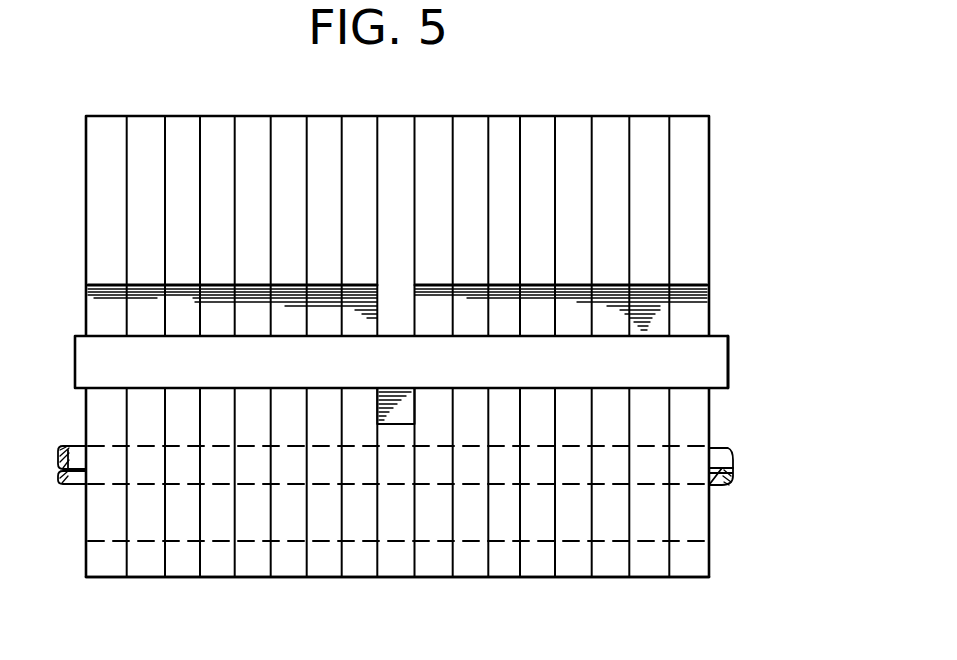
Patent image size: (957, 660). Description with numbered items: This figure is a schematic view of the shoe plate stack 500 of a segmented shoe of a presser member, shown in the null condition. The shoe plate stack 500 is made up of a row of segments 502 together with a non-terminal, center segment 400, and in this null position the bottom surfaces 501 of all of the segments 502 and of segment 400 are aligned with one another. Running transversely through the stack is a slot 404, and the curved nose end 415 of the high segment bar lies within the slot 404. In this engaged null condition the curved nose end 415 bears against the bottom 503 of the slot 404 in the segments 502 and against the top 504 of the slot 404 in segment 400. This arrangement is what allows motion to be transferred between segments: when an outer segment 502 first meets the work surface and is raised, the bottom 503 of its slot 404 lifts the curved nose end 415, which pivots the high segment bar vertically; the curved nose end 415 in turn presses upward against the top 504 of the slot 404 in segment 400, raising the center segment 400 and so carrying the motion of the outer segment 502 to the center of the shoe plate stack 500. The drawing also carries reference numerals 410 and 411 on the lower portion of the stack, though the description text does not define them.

The segment 400 is at (397, 125).
The slot 404 is at (697, 318).
The side connector 410 is at (730, 448).
The lower column section 411 is at (695, 512).
The curved nose end 415 is at (728, 355).
The shoe plate stack 500 is at (712, 540).
The bottom surfaces 501 is at (110, 578).
The segments 502 is at (110, 132).
The bottom of slot 503 is at (97, 388).
The top of slot 504 is at (403, 337).